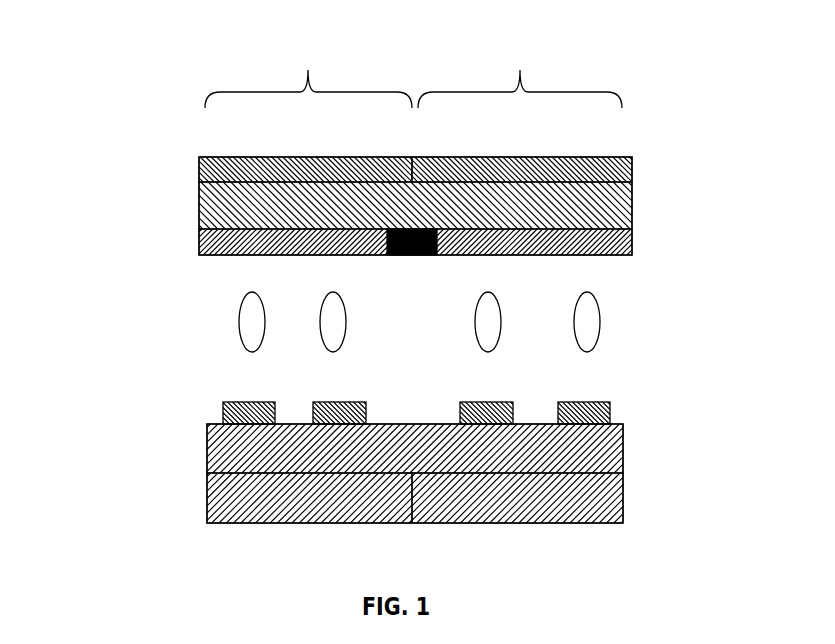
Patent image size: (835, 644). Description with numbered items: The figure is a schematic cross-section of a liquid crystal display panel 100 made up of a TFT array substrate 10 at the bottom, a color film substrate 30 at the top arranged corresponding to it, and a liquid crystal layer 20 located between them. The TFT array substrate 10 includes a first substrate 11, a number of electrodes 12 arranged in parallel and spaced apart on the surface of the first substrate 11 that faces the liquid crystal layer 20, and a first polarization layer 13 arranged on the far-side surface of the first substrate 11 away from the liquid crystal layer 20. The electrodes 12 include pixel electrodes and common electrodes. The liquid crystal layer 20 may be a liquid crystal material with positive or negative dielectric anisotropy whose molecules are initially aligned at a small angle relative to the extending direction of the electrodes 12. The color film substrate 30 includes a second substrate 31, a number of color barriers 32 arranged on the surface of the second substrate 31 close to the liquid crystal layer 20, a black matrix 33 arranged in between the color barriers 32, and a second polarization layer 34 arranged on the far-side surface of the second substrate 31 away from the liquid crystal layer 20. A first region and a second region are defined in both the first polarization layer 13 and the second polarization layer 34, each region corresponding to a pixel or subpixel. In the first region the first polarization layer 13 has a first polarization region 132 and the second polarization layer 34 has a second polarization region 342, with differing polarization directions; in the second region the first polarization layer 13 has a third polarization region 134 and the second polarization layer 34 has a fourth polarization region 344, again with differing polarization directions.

The liquid crystal display panel 100 is at (132, 75).
The color film substrate 30 is at (83, 163).
The second polarization layer 34 is at (703, 105).
The second polarization region 342 is at (372, 166).
The fourth polarization region 344 is at (617, 172).
The second substrate 31 is at (634, 205).
The color barriers 32 is at (634, 247).
The black matrix 33 is at (416, 256).
The liquid crystal layer 20 is at (597, 322).
The TFT array substrate 10 is at (90, 350).
The first substrate 11 is at (626, 440).
The electrodes 12 is at (248, 396).
The first polarization layer 13 is at (705, 510).
The first polarization region 132 is at (373, 504).
The third polarization region 134 is at (626, 490).